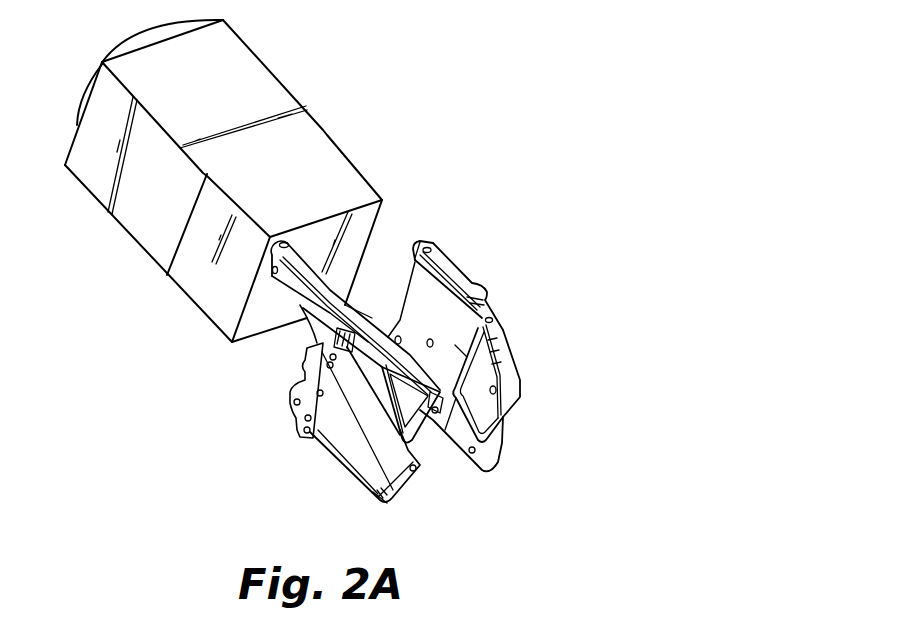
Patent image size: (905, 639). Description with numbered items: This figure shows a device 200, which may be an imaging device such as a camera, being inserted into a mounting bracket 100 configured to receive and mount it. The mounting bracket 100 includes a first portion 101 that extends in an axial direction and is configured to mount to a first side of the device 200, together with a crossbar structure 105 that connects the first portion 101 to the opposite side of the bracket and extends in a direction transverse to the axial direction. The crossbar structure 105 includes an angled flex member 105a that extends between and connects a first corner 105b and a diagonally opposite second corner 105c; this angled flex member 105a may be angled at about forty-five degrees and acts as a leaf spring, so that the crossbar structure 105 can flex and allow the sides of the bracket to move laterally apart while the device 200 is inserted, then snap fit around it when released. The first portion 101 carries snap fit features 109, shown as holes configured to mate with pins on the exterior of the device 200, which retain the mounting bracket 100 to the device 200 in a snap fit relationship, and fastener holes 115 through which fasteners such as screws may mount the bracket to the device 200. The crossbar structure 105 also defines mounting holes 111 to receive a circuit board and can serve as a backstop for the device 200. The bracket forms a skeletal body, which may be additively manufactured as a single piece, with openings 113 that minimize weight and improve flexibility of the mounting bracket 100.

The device 200 is at (287, 90).
The mounting bracket 100 is at (460, 270).
The first portion 101 is at (298, 393).
The crossbar structure 105 is at (456, 492).
The angled flex member 105a is at (452, 424).
The first corner 105b is at (398, 428).
The second corner 105c is at (490, 462).
The snap fit features 109 is at (395, 337).
The mounting holes 111 is at (490, 308).
The openings 113 is at (403, 392).
The fastener holes 115 is at (428, 238).